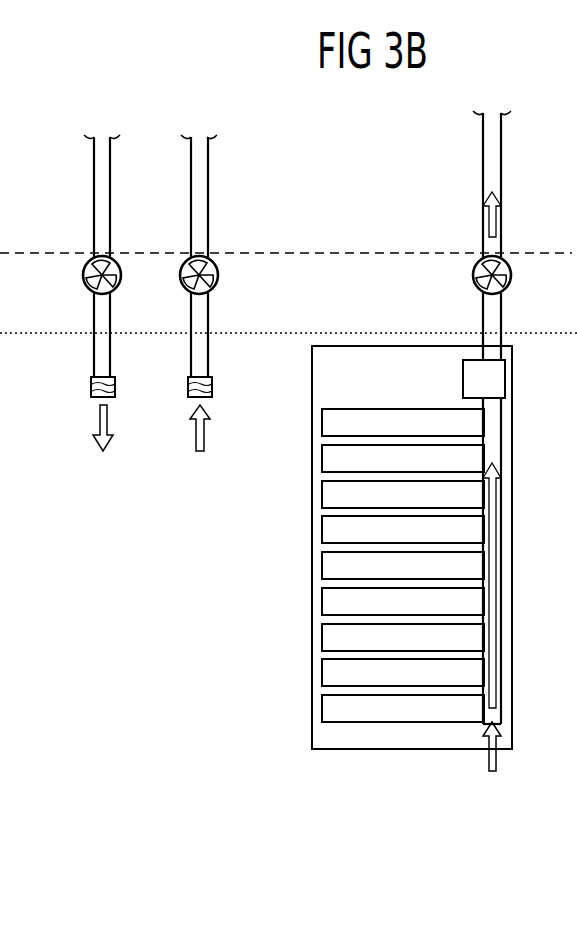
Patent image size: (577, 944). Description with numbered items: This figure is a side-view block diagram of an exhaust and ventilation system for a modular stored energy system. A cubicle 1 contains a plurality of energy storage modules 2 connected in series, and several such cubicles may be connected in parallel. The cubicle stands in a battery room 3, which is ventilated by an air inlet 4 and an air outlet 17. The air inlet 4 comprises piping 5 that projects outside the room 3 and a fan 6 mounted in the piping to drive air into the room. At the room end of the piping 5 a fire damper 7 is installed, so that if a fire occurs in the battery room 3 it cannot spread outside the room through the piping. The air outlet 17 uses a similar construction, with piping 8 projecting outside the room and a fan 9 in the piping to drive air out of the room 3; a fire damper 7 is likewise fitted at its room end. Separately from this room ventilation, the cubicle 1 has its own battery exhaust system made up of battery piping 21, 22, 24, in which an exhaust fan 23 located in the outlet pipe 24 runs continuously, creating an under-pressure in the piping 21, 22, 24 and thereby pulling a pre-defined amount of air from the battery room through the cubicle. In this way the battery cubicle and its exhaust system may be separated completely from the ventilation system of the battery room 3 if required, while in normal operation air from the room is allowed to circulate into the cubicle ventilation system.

The cubicle 1 is at (415, 738).
The energy storage module 2 is at (336, 510).
The battery room 3 is at (124, 750).
The air inlet 4 is at (84, 316).
The piping 5 is at (101, 157).
The fan 6 is at (114, 264).
The fire damper 7 is at (87, 405).
The piping 8 is at (200, 173).
The fan 9 is at (208, 264).
The air outlet 17 is at (221, 303).
The battery piping 21 is at (492, 446).
The battery piping 22 is at (496, 377).
The exhaust fan 23 is at (511, 276).
The outlet pipe 24 is at (490, 173).